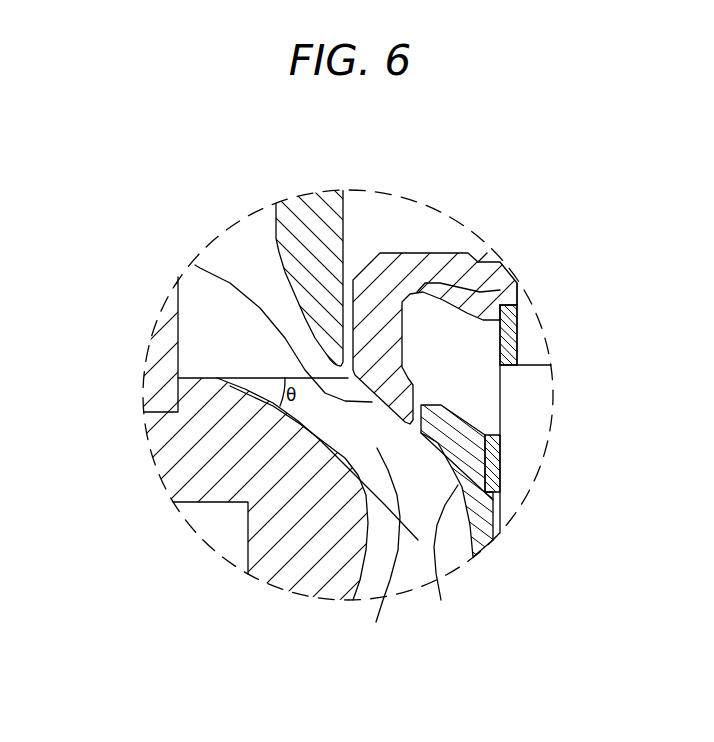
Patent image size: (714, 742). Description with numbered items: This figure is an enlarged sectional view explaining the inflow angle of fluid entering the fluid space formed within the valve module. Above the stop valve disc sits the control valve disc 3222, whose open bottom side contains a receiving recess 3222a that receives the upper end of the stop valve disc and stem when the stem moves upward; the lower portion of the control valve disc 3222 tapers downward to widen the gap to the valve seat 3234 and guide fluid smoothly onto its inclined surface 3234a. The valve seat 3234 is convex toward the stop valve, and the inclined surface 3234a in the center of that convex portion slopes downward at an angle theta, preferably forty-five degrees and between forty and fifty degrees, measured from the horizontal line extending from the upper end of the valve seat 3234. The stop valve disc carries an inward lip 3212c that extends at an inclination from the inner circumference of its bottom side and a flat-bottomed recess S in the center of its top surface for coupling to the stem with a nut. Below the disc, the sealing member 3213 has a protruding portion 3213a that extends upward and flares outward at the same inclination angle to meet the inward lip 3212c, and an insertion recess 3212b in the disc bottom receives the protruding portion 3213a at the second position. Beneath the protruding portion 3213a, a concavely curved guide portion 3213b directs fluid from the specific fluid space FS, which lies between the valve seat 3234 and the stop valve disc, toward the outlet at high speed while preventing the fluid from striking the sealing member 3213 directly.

The control valve disc 3222 is at (369, 346).
The receiving recess 3222a is at (527, 269).
The inward lip 3212c is at (230, 313).
The insertion recess 3212b is at (515, 276).
The sealing member 3213 is at (495, 519).
The protruding portion 3213a is at (492, 467).
The guide portion 3213b is at (430, 570).
The valve seat 3234 is at (237, 386).
The inclined surface 3234a is at (299, 519).
The specific fluid space FS is at (381, 576).
The flat-bottomed recess S is at (518, 239).